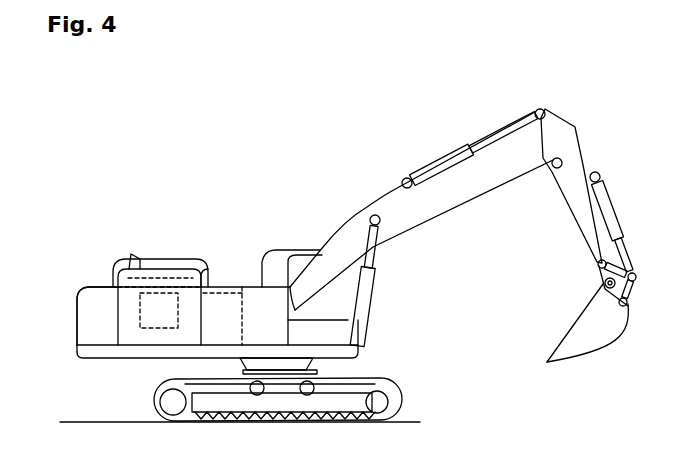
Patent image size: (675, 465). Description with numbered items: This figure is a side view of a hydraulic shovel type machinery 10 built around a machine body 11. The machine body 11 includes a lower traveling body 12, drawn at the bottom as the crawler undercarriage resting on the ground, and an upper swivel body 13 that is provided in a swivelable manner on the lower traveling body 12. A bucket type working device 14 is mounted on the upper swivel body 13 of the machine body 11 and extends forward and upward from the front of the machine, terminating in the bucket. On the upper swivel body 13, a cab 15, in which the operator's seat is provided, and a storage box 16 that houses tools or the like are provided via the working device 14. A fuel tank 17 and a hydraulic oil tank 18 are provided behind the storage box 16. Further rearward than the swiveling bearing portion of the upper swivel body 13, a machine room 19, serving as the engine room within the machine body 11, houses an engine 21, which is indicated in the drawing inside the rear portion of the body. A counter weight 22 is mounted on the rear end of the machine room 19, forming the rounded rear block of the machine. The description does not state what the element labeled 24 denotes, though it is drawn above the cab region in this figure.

The hydraulic shovel type machinery 10 is at (467, 88).
The machine body 11 is at (247, 272).
The lower traveling body 12 is at (358, 425).
The upper swivel body 13 is at (337, 366).
The bucket type working device 14 is at (563, 121).
The cab 15 is at (292, 251).
The storage box 16 is at (343, 331).
The fuel tank 17 is at (242, 289).
The hydraulic oil tank 18 is at (216, 287).
The machine room 19 is at (118, 296).
The engine 21 is at (142, 328).
The counter weight 22 is at (85, 315).
The canopy guard 24 is at (163, 274).